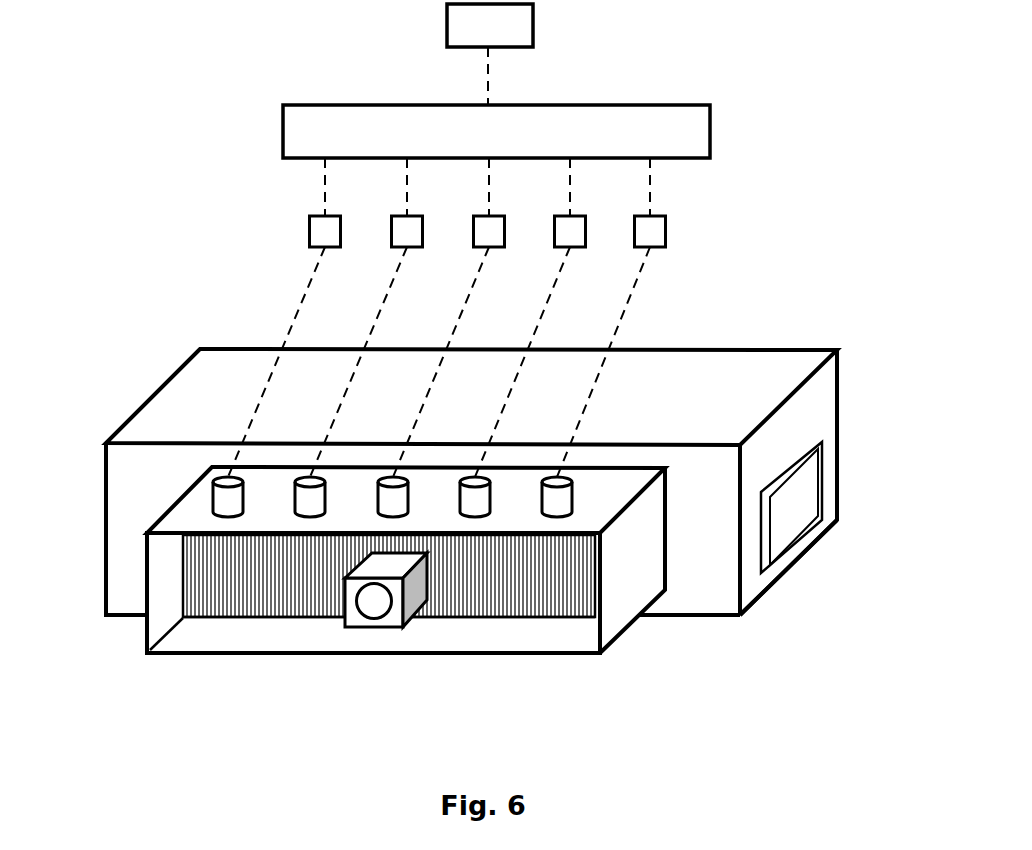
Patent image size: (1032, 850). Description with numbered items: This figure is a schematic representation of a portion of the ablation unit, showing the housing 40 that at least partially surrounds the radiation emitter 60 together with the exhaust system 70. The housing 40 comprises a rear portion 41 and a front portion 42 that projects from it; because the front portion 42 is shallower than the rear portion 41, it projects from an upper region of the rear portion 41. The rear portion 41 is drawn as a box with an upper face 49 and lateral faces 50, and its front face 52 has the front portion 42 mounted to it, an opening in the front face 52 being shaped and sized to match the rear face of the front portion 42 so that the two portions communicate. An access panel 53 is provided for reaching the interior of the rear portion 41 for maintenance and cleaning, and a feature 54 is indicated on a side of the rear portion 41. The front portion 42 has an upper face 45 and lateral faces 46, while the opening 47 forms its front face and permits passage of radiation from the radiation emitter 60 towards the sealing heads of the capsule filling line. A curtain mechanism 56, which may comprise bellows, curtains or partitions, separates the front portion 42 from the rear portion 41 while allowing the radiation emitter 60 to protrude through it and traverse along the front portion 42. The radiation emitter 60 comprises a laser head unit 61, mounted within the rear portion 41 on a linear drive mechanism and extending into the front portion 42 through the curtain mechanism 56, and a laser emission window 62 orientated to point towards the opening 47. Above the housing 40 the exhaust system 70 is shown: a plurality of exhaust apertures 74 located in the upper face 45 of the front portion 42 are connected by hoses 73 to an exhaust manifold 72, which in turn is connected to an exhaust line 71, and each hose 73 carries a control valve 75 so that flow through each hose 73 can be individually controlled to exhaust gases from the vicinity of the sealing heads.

The housing 40 is at (778, 321).
The rear portion 41 is at (824, 405).
The front portion 42 is at (618, 600).
The upper face 45 is at (190, 517).
The lateral faces 46 is at (362, 579).
The opening 47 is at (207, 643).
The upper face 49 is at (685, 375).
The lateral faces 50 is at (752, 580).
The front face 52 is at (712, 570).
The access panel 53 is at (555, 637).
The window opening 54 is at (793, 508).
The curtain mechanism 56 is at (467, 568).
The radiation emitter 60 is at (364, 649).
The laser head unit 61 is at (355, 617).
The laser emission window 62 is at (375, 600).
The exhaust system 70 is at (706, 42).
The exhaust line 71 is at (490, 25).
The exhaust manifold 72 is at (496, 131).
The hoses 73 is at (297, 307).
The exhaust apertures 74 is at (223, 499).
The control valve 75 is at (322, 230).